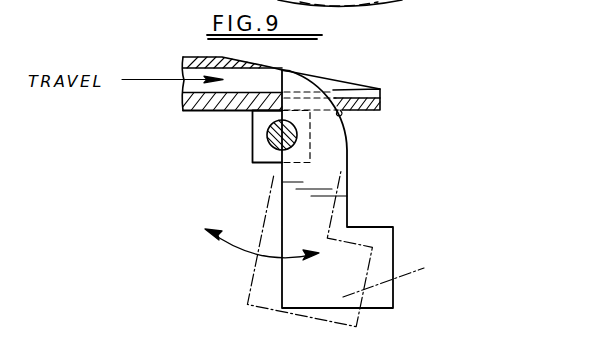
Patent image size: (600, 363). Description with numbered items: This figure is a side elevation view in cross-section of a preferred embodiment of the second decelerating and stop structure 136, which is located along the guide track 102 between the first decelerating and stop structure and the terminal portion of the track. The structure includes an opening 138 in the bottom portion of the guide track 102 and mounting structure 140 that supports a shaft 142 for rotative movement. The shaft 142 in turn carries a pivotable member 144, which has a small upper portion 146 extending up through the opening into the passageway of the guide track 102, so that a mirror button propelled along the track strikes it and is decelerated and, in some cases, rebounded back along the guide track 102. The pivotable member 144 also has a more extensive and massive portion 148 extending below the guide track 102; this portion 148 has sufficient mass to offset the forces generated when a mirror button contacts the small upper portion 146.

The guide track 102 is at (193, 57).
The second decelerating and stop structure 136 is at (413, 198).
The opening 138 is at (348, 120).
The mounting structure 140 is at (253, 133).
The shaft 142 is at (270, 143).
The pivotable member 144 is at (333, 151).
The small upper portion 146 is at (302, 85).
The more extensive and massive portion 148 is at (382, 270).